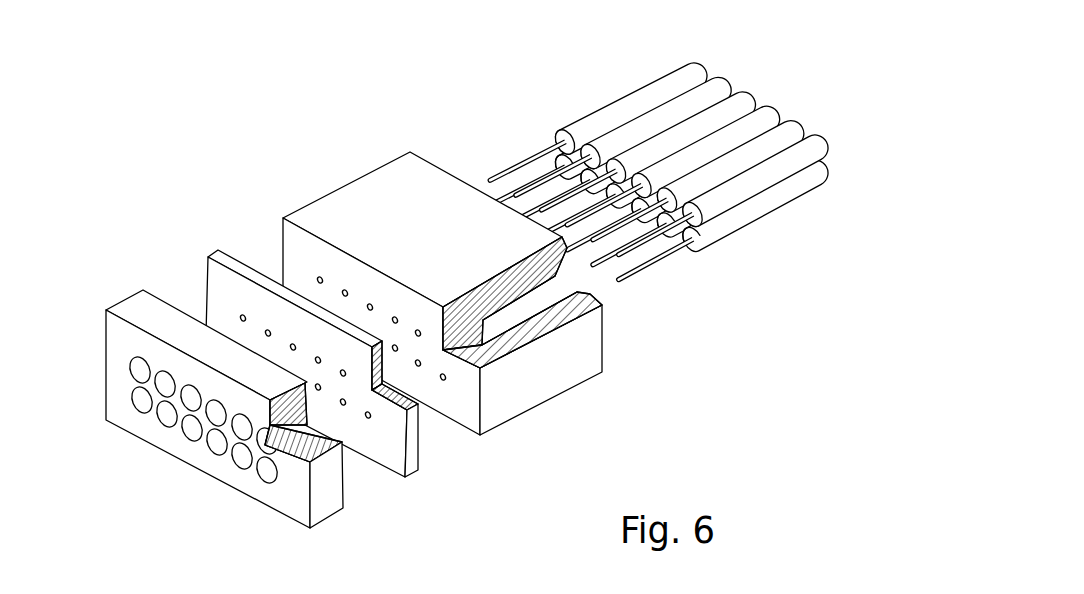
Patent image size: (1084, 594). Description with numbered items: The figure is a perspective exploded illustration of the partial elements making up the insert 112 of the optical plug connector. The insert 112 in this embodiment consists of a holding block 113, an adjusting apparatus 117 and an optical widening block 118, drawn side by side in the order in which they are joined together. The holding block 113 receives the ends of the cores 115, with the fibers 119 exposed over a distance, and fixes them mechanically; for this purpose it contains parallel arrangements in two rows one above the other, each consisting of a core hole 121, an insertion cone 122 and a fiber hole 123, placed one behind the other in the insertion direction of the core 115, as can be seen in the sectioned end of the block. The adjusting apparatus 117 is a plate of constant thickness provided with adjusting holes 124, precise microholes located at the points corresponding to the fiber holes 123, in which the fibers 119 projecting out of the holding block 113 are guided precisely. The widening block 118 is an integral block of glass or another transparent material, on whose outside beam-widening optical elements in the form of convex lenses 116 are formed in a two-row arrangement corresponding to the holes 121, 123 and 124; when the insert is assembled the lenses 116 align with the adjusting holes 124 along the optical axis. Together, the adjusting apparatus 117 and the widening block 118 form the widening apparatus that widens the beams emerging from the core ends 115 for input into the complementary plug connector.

The insert 112 is at (435, 286).
The holding block 113 is at (471, 296).
The core ends 115 is at (780, 135).
The convex lenses 116 is at (217, 443).
The adjusting apparatus 117 is at (289, 361).
The optical widening block 118 is at (190, 377).
The fibers 119 is at (560, 192).
The core hole 121 is at (523, 307).
The insertion cone 122 is at (492, 322).
The fiber hole 123 is at (420, 368).
The adjusting holes 124 is at (346, 406).